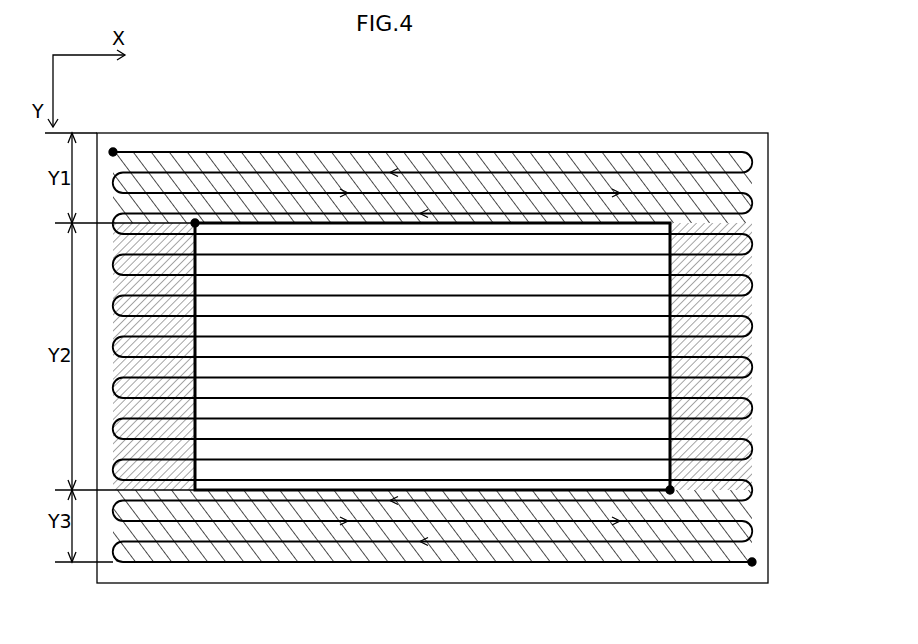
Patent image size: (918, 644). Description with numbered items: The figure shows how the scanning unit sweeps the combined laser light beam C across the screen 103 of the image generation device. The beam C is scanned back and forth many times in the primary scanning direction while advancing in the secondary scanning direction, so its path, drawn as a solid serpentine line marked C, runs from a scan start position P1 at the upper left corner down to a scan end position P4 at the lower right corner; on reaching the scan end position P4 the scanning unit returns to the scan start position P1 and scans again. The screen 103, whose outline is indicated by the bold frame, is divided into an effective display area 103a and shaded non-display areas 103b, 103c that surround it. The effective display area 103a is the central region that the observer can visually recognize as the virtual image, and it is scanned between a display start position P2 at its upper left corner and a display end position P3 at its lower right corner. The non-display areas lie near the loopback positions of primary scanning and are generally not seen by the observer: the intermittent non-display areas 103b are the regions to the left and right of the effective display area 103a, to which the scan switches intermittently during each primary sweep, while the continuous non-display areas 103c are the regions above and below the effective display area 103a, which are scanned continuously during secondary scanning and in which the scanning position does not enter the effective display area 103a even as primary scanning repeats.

The screen 103 is at (685, 132).
The effective display area 103a is at (650, 425).
The intermittent non-display areas 103b is at (168, 267).
The continuous non-display areas 103c is at (752, 155).
The combined laser light beam C is at (460, 170).
The scan start position P1 is at (116, 149).
The display start position P2 is at (196, 220).
The display end position P3 is at (669, 494).
The scan end position P4 is at (749, 565).